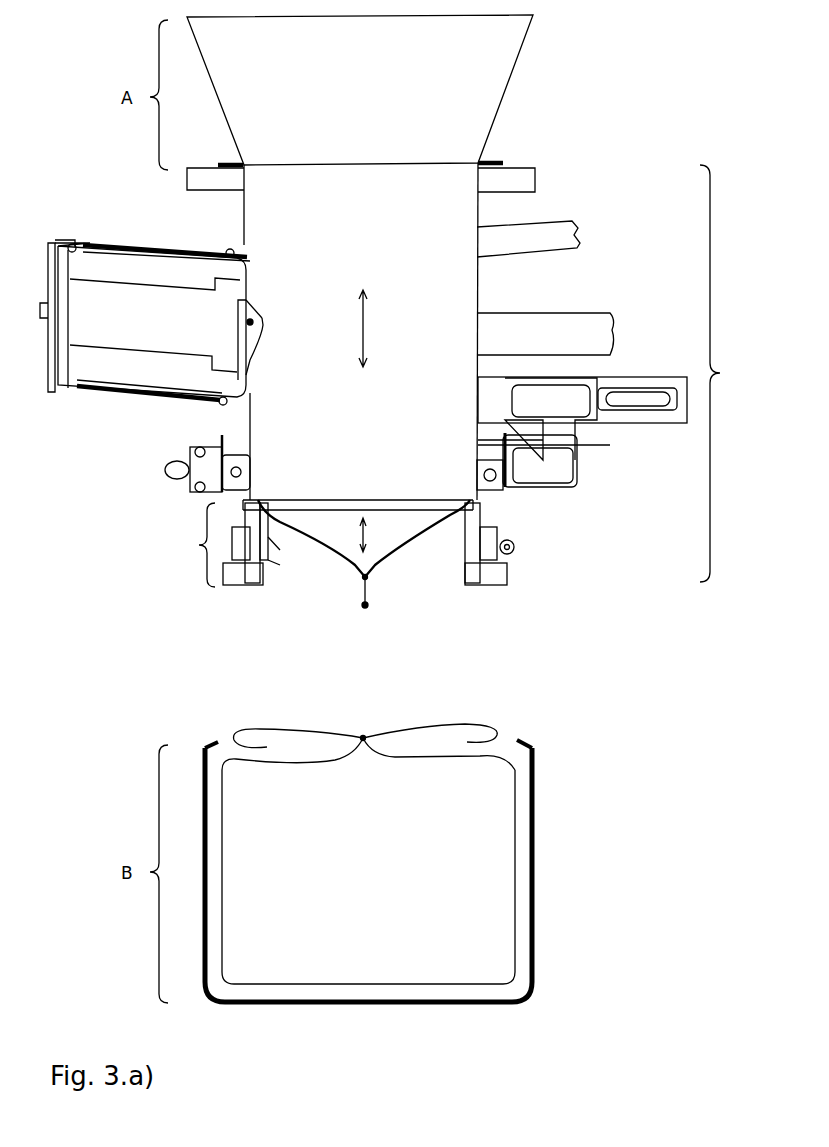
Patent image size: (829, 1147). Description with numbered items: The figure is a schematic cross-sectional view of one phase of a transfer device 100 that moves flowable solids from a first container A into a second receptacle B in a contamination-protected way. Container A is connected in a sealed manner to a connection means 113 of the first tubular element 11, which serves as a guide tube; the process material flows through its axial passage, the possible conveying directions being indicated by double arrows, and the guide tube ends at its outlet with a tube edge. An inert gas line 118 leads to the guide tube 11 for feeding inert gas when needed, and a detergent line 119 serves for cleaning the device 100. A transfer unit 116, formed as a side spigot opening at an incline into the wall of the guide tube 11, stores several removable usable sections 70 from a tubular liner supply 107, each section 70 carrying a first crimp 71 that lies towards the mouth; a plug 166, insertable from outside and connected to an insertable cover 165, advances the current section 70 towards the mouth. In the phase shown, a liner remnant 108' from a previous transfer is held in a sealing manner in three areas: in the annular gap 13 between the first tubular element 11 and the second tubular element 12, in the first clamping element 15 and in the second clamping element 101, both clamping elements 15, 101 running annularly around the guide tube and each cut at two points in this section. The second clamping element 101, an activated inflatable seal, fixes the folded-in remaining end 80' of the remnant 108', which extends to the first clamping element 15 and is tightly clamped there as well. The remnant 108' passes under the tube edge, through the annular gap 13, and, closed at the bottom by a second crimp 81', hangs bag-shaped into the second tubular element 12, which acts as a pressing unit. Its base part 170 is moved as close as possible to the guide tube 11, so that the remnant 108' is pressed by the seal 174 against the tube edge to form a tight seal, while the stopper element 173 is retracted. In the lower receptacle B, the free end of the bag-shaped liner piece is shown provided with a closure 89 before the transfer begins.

The first tubular element 11 is at (477, 280).
The connection means 113 is at (535, 177).
The inert gas line 118 is at (580, 235).
The detergent line 119 is at (614, 330).
The transfer device 100 is at (734, 373).
The remaining end 80' is at (582, 418).
The first clamping element 15 is at (503, 487).
The seal 174 is at (463, 497).
The annular gap 13 is at (332, 499).
The liner remnant 108' is at (364, 538).
The second crimp 81' is at (394, 595).
The second tubular element 12 is at (225, 545).
The base part 170 is at (507, 575).
The stopper element 173 is at (490, 520).
The second clamping element 101 is at (240, 457).
The plug 166 is at (150, 320).
The transfer unit 116 is at (54, 413).
The insertable cover 165 is at (55, 245).
The tubular liner supply 107 is at (118, 240).
The first crimp 71 is at (262, 310).
The usable section 70 is at (262, 346).
The closure 89 is at (365, 737).